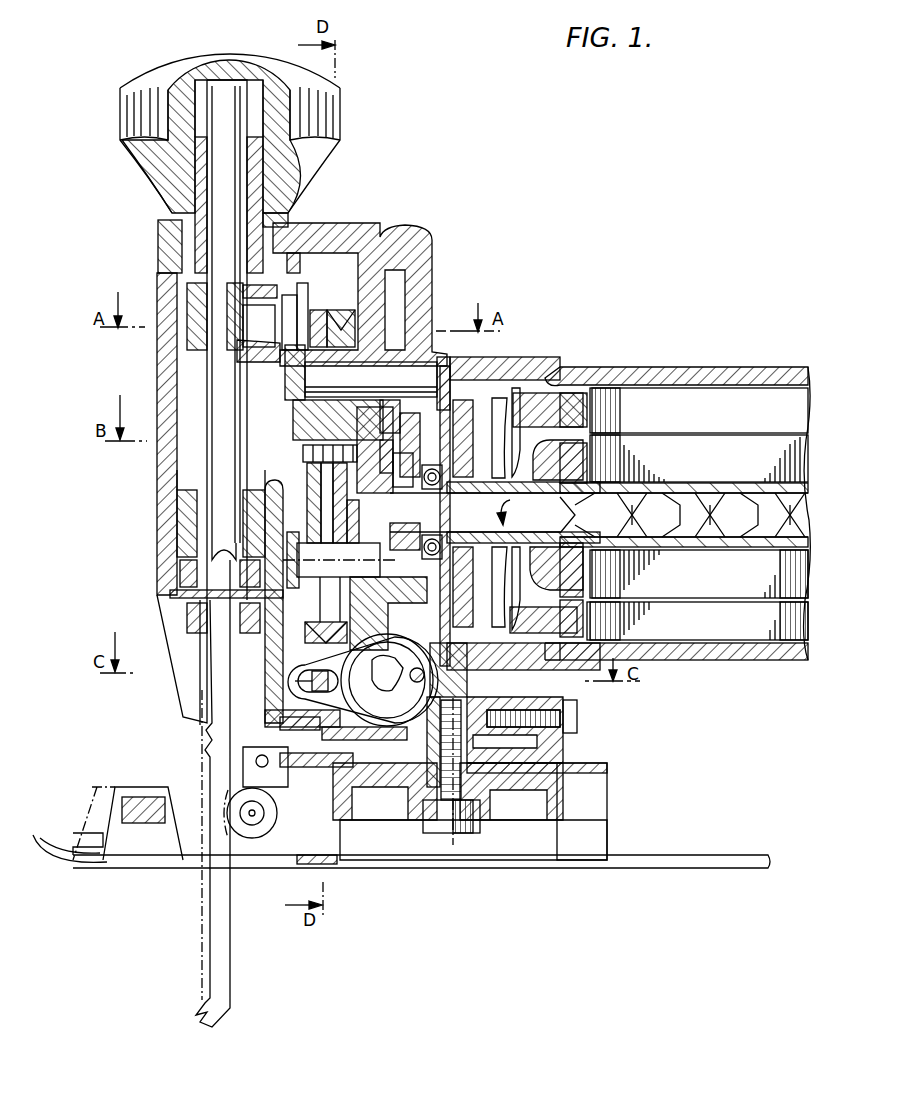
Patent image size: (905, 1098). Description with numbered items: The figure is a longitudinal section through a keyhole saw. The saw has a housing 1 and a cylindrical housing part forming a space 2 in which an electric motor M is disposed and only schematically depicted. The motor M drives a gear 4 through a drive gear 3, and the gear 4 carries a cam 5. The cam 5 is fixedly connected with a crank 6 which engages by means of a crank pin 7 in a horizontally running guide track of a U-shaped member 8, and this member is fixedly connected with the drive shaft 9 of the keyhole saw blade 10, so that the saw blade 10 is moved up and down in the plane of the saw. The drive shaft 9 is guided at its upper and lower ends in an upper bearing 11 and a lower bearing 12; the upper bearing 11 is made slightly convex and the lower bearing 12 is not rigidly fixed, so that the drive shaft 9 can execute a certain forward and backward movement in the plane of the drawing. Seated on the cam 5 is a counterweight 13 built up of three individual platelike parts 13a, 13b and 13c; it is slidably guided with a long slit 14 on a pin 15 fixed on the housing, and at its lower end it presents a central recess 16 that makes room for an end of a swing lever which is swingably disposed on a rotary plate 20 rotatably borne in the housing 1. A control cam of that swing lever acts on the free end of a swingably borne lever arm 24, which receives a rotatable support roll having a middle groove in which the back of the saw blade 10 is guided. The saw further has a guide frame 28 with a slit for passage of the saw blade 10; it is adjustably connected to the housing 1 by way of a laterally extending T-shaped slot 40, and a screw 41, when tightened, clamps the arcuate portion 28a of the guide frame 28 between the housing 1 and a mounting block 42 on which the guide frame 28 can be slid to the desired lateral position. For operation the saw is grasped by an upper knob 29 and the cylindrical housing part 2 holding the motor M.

The housing 1 is at (420, 288).
The space 2 is at (572, 378).
The drive gear 3 is at (445, 503).
The gear 4 is at (378, 262).
The cam 5 is at (347, 322).
The crank 6 is at (296, 422).
The crank pin 7 is at (266, 336).
The U-shaped member 8 is at (240, 297).
The drive shaft 9 is at (216, 178).
The keyhole saw blade 10 is at (220, 986).
The upper bearing 11 is at (200, 203).
The lower bearing 12 is at (180, 527).
The counterweight 13 is at (320, 296).
The platelike part 13a is at (342, 512).
The platelike part 13b is at (325, 492).
The platelike part 13c is at (305, 463).
The long slit 14 is at (340, 608).
The pin 15 is at (341, 571).
The central recess 16 is at (300, 688).
The rotary plate 20 is at (422, 643).
The lever arm 24 is at (378, 770).
The guide frame 28 is at (650, 870).
The arcuate portion 28a is at (598, 765).
The upper knob 29 is at (135, 108).
The T-shaped slot 40 is at (488, 790).
The screw 41 is at (452, 838).
The mounting block 42 is at (470, 808).
The electric motor M is at (695, 402).